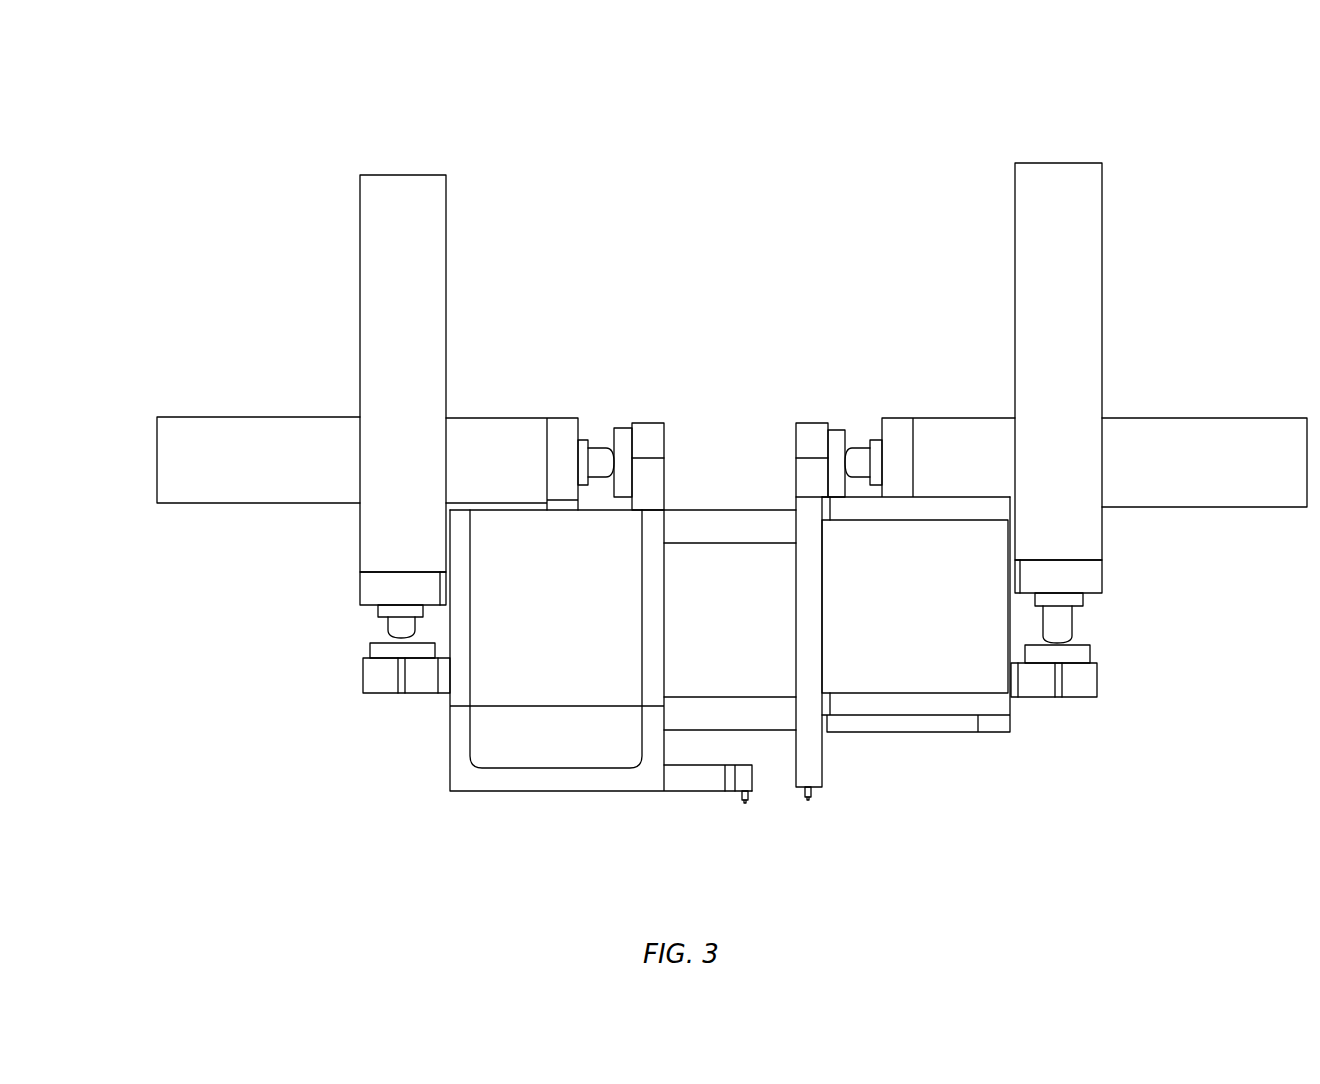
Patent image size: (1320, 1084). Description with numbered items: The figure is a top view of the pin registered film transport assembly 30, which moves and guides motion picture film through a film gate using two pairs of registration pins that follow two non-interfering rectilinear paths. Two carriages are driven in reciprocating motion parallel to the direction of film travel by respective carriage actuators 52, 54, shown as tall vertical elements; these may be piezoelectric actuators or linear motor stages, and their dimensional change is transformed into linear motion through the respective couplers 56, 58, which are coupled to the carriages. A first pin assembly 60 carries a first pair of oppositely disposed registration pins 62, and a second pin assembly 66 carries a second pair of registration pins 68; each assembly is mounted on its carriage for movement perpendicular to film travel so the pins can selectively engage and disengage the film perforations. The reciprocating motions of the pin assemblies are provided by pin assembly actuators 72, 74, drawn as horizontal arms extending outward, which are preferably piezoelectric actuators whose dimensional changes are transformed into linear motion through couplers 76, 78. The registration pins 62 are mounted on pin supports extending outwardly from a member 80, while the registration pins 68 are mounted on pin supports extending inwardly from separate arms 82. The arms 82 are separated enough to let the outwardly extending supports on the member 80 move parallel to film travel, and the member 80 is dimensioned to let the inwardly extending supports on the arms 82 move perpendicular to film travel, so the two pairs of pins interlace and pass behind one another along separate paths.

The pin registered film transport assembly 30 is at (816, 308).
The carriage actuator 52 is at (410, 192).
The carriage actuator 54 is at (1065, 180).
The coupler 56 is at (372, 678).
The coupler 58 is at (1088, 681).
The first pin assembly 60 is at (462, 728).
The registration pins 62 is at (745, 803).
The second pin assembly 66 is at (970, 510).
The registration pins 68 is at (810, 800).
The pin assembly actuator 72 is at (221, 425).
The pin assembly actuator 74 is at (1200, 440).
The coupler 76 is at (648, 440).
The coupler 78 is at (812, 440).
The member 80 is at (672, 776).
The arms 82 is at (818, 757).